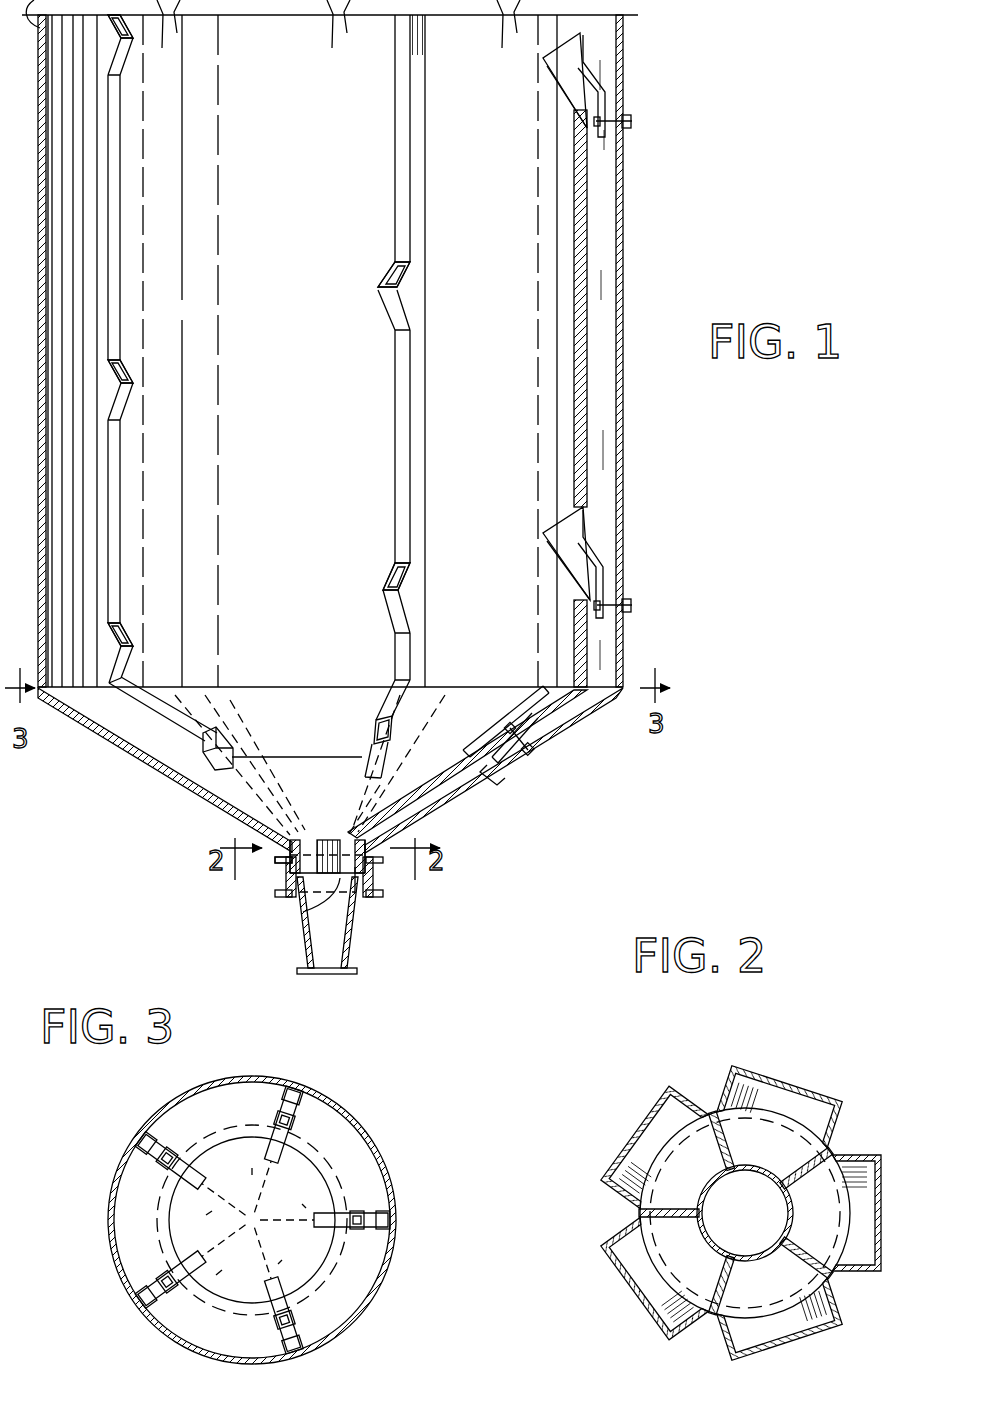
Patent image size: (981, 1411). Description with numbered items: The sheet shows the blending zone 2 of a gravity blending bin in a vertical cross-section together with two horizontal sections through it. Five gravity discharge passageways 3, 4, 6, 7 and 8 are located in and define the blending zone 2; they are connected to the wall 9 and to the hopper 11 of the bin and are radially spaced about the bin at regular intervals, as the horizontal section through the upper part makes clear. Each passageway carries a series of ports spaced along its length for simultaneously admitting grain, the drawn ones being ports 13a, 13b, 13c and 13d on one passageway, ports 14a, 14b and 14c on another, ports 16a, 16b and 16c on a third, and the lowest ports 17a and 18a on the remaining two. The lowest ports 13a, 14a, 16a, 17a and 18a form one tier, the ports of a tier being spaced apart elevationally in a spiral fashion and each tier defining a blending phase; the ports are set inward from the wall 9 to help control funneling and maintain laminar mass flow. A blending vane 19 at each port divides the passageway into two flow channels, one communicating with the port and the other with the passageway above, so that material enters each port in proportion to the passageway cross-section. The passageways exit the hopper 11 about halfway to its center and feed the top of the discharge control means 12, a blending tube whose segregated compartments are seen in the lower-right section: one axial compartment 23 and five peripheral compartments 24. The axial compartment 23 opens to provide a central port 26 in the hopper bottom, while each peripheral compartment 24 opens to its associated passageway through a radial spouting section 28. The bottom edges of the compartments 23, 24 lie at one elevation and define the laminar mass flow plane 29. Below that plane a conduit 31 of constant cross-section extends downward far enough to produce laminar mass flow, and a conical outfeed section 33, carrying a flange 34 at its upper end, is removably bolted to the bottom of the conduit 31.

In FIG. 1, the blending zone 2 is at (508, 224).
In FIG. 1, the gravity discharge passageway 3 is at (115, 513).
In FIG. 3, the gravity discharge passageway 3 is at (205, 1210).
In FIG. 1, the gravity discharge passageway 4 is at (420, 450).
In FIG. 3, the gravity discharge passageway 4 is at (250, 1163).
In FIG. 1, the gravity discharge passageway 6 is at (608, 420).
In FIG. 3, the gravity discharge passageway 6 is at (302, 1203).
In FIG. 3, the gravity discharge passageway 7 is at (282, 1260).
In FIG. 3, the gravity discharge passageway 8 is at (222, 1270).
In FIG. 3, the wall 9 is at (388, 1165).
In FIG. 1, the hopper 11 is at (117, 731).
In FIG. 1, the discharge control means 12 is at (344, 941).
In FIG. 2, the discharge control means 12 is at (708, 1098).
In FIG. 1, the port 13a is at (213, 735).
In FIG. 3, the port 13a is at (185, 1157).
In FIG. 1, the port 13b is at (130, 656).
In FIG. 1, the port 13c is at (128, 382).
In FIG. 1, the port 13d is at (122, 52).
In FIG. 1, the port 14a is at (378, 725).
In FIG. 3, the port 14a is at (285, 1128).
In FIG. 1, the port 14b is at (393, 600).
In FIG. 1, the port 14c is at (397, 288).
In FIG. 1, the port 16a is at (530, 698).
In FIG. 3, the port 16a is at (367, 1212).
In FIG. 1, the port 16b is at (568, 547).
In FIG. 1, the port 16c is at (578, 70).
In FIG. 3, the port 17a is at (286, 1330).
In FIG. 3, the port 18a is at (155, 1298).
In FIG. 1, the blending vane 19 is at (603, 100).
In FIG. 1, the axial compartment 23 is at (318, 878).
In FIG. 2, the axial compartment 23 is at (759, 1228).
In FIG. 1, the peripheral compartment 24 is at (363, 913).
In FIG. 2, the peripheral compartment 24 is at (775, 1151).
In FIG. 1, the central port 26 is at (327, 836).
In FIG. 2, the radial spouting section 28 is at (827, 1118).
In FIG. 1, the laminar mass flow plane 29 is at (318, 897).
In FIG. 1, the conduit 31 is at (382, 878).
In FIG. 1, the conical outfeed section 33 is at (302, 953).
In FIG. 1, the flange 34 is at (383, 900).